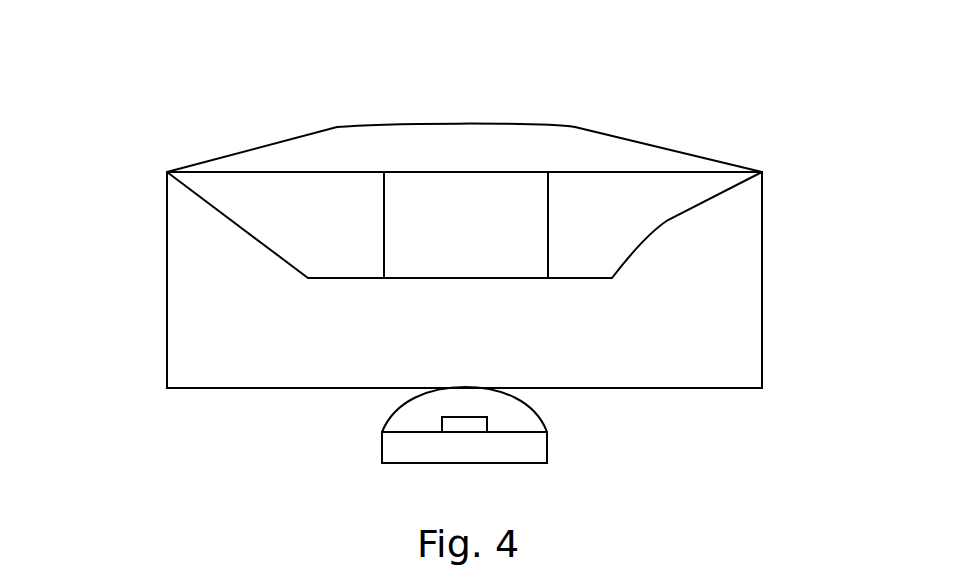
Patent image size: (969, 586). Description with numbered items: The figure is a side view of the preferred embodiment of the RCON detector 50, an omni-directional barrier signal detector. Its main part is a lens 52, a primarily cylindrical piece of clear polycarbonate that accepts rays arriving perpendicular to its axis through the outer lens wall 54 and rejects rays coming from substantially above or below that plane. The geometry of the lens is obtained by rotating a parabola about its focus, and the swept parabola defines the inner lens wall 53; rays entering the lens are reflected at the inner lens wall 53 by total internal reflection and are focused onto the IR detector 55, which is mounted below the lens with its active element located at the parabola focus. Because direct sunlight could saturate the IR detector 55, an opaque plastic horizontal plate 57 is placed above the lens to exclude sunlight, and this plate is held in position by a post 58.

The RCON detector 50 is at (183, 127).
The lens 52 is at (762, 217).
The inner lens wall 53 is at (260, 235).
The outer lens wall 54 is at (167, 218).
The IR detector 55 is at (427, 389).
The opaque plastic horizontal plate 57 is at (400, 142).
The post 58 is at (518, 218).